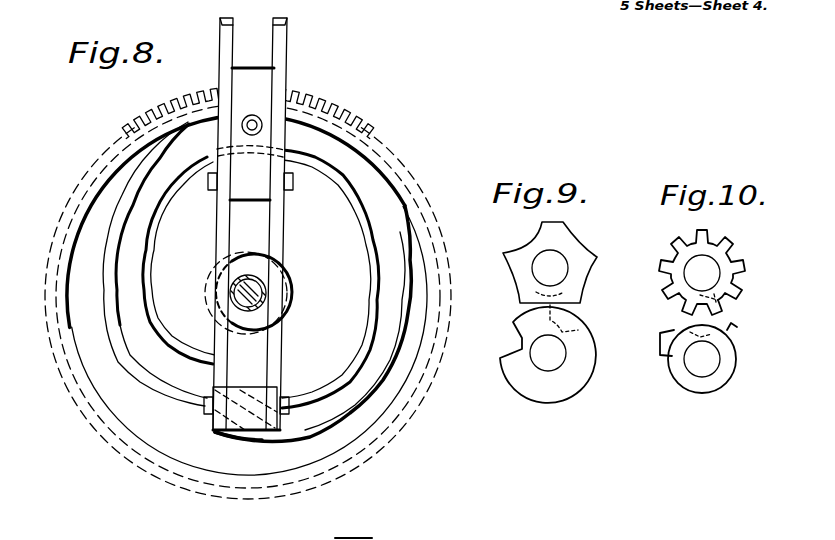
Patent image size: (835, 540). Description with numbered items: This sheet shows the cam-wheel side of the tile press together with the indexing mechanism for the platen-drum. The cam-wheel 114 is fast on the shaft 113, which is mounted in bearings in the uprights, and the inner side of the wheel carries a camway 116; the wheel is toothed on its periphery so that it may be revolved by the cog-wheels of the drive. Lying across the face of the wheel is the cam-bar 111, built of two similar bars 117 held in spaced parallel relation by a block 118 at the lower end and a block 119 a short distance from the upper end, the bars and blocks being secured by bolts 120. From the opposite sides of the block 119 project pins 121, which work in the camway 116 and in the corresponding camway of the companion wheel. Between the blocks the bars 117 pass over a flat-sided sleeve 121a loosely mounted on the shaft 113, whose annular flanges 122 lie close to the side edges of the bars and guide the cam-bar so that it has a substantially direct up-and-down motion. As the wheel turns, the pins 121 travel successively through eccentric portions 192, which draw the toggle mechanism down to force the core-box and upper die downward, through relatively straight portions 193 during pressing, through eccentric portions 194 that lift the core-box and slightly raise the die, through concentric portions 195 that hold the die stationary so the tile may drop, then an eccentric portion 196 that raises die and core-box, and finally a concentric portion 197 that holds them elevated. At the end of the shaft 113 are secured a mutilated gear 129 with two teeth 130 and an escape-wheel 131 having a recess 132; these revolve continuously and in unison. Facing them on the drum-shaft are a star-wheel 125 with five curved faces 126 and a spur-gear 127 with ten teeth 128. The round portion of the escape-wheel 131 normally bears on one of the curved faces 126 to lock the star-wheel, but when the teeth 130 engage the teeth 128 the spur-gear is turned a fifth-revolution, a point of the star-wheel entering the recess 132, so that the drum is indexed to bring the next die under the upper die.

In FIG. 8, the cam-bar 111 is at (286, 72).
In FIG. 8, the shaft 113 is at (247, 293).
In FIG. 8, the cam-wheel 114 is at (385, 151).
In FIG. 8, the camway 116 is at (397, 368).
In FIG. 8, the bars 117 is at (222, 241).
In FIG. 8, the block 118 is at (246, 408).
In FIG. 8, the block 119 is at (250, 163).
In FIG. 8, the bolts 120 is at (309, 186).
In FIG. 8, the pins 121 is at (252, 125).
In FIG. 8, the flat-sided sleeve 121a is at (260, 286).
In FIG. 8, the annular flanges 122 is at (288, 300).
In FIG. 9, the star-wheel 125 is at (576, 262).
In FIG. 9, the curved faces 126 is at (530, 226).
In FIG. 10, the spur-gear 127 is at (728, 270).
In FIG. 10, the teeth 128 is at (738, 230).
In FIG. 10, the mutilated gear 129 is at (725, 366).
In FIG. 10, the teeth 130 is at (662, 340).
In FIG. 9, the escape-wheel 131 is at (581, 368).
In FIG. 9, the recess 132 is at (513, 348).
In FIG. 8, the eccentric portions 192 is at (118, 290).
In FIG. 8, the straight portions 193 is at (207, 362).
In FIG. 8, the eccentric portions 194 is at (307, 418).
In FIG. 8, the concentric portions 195 is at (387, 327).
In FIG. 8, the eccentric portion 196 is at (387, 218).
In FIG. 8, the concentric portion 197 is at (342, 150).